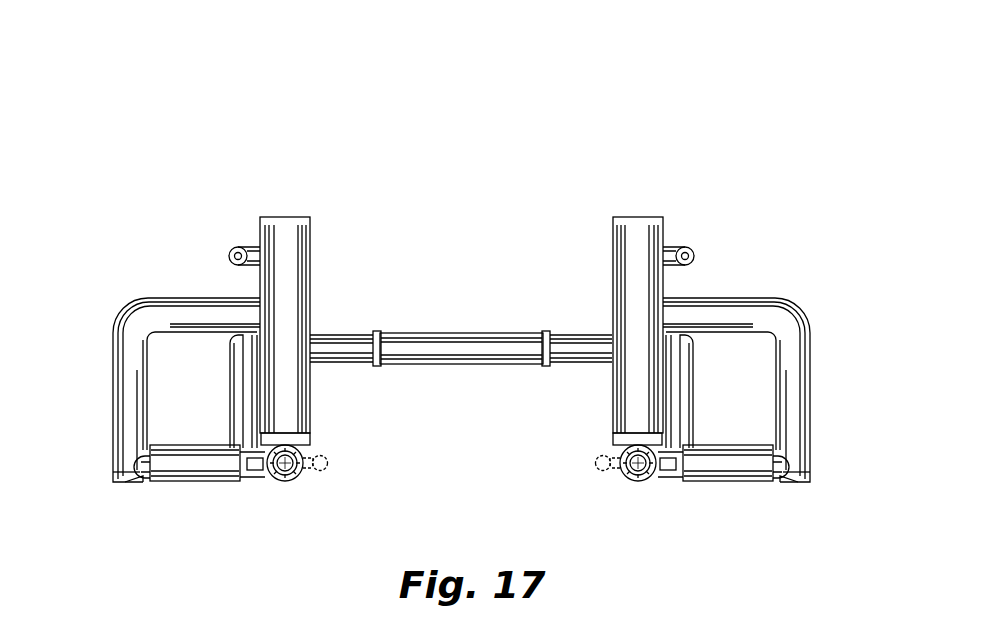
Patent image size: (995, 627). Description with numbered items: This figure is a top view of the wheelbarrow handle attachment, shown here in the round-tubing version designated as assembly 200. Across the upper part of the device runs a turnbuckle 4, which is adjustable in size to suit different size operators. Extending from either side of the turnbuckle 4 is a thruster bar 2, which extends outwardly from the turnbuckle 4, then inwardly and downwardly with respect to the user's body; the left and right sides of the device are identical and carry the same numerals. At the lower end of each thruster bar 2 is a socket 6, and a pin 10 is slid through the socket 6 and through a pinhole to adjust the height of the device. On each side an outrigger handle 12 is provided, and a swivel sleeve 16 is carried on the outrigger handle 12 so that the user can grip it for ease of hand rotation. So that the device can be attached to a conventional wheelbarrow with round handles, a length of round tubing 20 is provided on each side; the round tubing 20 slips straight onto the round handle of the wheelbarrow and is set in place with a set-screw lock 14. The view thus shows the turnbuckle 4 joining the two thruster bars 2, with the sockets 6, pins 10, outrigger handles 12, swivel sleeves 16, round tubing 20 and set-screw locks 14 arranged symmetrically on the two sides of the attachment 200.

The exercise apparatus 200 is at (157, 170).
The thruster bar 2 is at (332, 334).
The turnbuckle 4 is at (473, 332).
The socket 6 is at (277, 481).
The pin 10 is at (312, 476).
The outrigger handle 12 is at (122, 313).
The set-screw lock 14 is at (231, 251).
The swivel sleeve 16 is at (167, 483).
The round tubing 20 is at (312, 255).